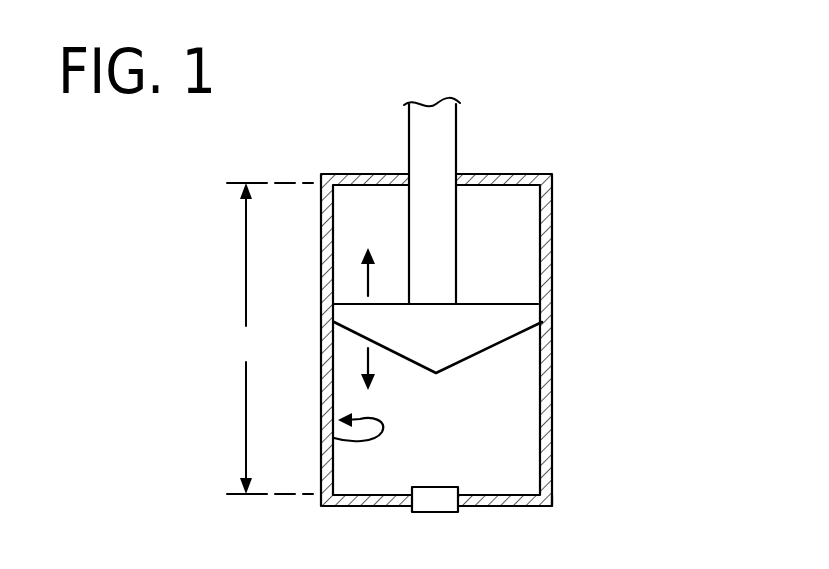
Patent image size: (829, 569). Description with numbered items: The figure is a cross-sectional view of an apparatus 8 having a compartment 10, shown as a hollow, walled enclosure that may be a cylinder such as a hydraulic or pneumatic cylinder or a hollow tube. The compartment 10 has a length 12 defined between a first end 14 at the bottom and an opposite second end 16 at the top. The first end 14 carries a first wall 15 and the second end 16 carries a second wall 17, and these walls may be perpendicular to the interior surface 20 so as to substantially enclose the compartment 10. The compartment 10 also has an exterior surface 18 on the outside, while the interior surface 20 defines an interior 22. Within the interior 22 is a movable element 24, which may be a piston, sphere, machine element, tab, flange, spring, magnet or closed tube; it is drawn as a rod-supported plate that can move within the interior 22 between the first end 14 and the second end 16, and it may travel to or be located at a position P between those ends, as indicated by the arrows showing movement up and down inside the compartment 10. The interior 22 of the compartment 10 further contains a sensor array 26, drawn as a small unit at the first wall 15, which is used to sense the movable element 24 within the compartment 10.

The apparatus 8 is at (594, 204).
The compartment 10 is at (484, 426).
The length 12 is at (270, 338).
The first end 14 is at (560, 503).
The first wall 15 is at (358, 509).
The second end 16 is at (554, 172).
The second wall 17 is at (362, 168).
The exterior surface 18 is at (553, 378).
The interior surface 20 is at (325, 433).
The interior 22 is at (520, 243).
The movable element 24 is at (442, 131).
The sensor array 26 is at (440, 512).
The position P is at (553, 323).